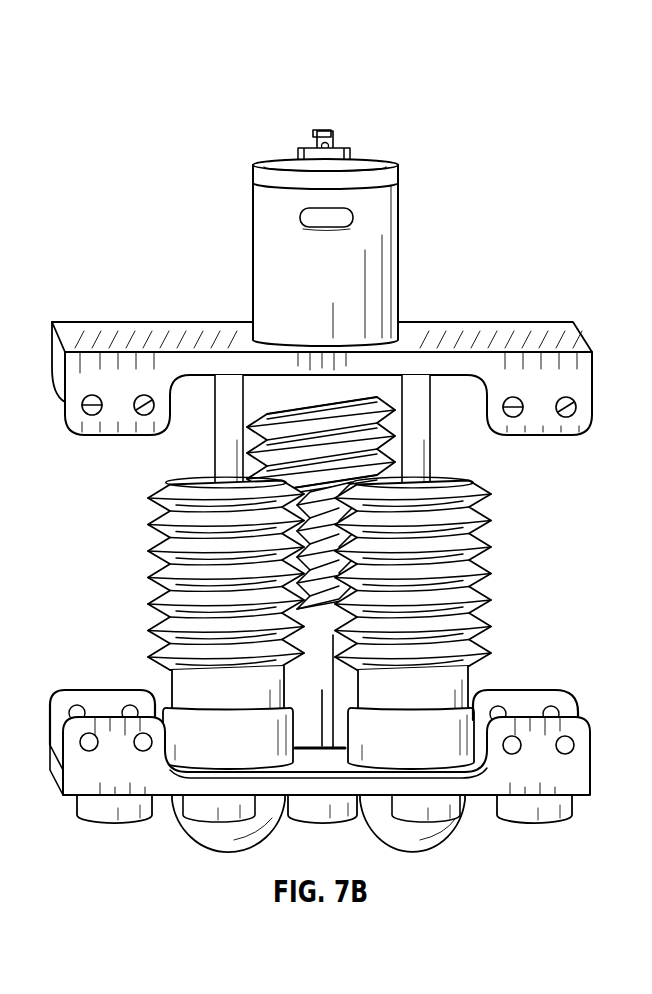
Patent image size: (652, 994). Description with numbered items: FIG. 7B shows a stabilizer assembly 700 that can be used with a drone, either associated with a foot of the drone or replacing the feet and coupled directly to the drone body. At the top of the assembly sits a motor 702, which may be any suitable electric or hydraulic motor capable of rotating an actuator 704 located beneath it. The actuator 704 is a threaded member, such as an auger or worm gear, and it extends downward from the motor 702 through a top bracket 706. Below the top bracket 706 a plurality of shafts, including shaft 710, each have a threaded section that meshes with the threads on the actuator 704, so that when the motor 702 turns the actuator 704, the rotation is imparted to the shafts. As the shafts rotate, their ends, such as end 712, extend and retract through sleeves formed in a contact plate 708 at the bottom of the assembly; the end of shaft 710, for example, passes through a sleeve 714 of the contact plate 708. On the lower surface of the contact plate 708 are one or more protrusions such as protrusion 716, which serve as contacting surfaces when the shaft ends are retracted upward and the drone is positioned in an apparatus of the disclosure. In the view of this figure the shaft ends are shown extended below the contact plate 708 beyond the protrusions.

The stabilizer assembly 700 is at (496, 69).
The motor 702 is at (398, 178).
The actuator 704 is at (352, 402).
The top bracket 706 is at (553, 344).
The contact plate 708 is at (549, 711).
The shaft 710 is at (490, 540).
The end 712 is at (446, 840).
The sleeve 714 is at (453, 740).
The protrusion 716 is at (546, 812).